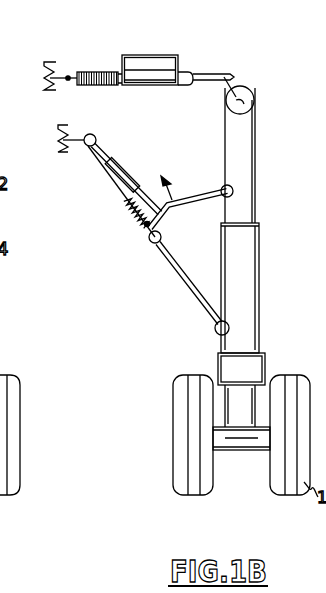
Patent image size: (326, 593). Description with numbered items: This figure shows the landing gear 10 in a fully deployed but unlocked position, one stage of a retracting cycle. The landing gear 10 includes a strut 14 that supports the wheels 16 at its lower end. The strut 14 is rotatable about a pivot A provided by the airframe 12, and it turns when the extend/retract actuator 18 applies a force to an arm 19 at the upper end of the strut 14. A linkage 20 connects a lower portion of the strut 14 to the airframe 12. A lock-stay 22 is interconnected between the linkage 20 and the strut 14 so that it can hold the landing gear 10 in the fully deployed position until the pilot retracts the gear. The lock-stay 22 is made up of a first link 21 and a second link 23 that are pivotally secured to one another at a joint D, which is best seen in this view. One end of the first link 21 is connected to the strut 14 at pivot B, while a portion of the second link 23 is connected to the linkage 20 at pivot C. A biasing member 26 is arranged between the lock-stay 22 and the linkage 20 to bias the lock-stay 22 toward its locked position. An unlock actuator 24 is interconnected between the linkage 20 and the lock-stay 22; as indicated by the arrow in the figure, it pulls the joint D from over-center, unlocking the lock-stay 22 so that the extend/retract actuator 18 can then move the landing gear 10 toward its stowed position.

The landing gear 10 is at (140, 334).
The airframe 12 is at (42, 73).
The strut 14 is at (250, 272).
The wheels 16 is at (14, 486).
The extend/retract actuator 18 is at (170, 56).
The arm 19 is at (233, 75).
The linkage 20 is at (160, 285).
The first link 21 is at (221, 186).
The lock-stay 22 is at (204, 183).
The second link 23 is at (163, 217).
The unlock actuator 24 is at (113, 158).
The biasing member 26 is at (125, 226).
The pivot A is at (254, 106).
The pivot B is at (233, 190).
The pivot C is at (150, 244).
The joint D is at (197, 206).